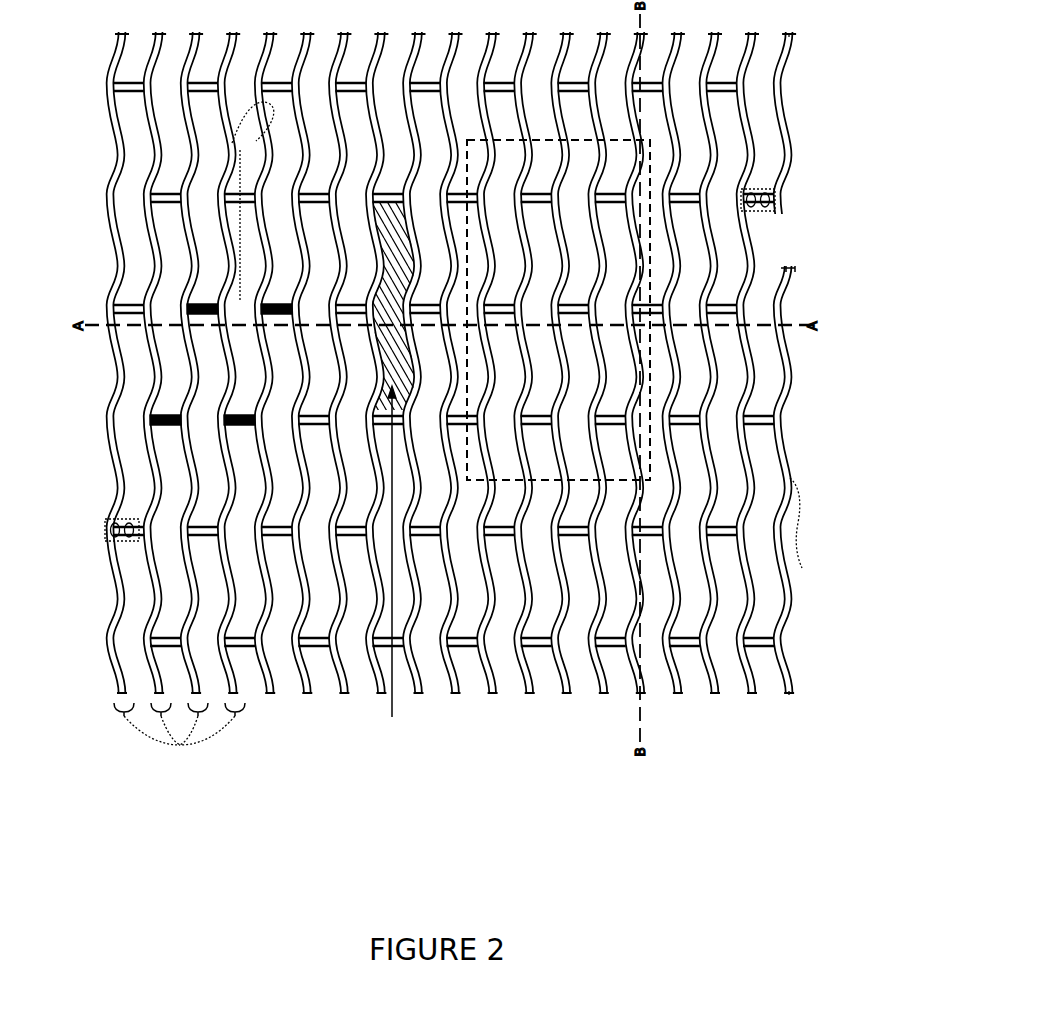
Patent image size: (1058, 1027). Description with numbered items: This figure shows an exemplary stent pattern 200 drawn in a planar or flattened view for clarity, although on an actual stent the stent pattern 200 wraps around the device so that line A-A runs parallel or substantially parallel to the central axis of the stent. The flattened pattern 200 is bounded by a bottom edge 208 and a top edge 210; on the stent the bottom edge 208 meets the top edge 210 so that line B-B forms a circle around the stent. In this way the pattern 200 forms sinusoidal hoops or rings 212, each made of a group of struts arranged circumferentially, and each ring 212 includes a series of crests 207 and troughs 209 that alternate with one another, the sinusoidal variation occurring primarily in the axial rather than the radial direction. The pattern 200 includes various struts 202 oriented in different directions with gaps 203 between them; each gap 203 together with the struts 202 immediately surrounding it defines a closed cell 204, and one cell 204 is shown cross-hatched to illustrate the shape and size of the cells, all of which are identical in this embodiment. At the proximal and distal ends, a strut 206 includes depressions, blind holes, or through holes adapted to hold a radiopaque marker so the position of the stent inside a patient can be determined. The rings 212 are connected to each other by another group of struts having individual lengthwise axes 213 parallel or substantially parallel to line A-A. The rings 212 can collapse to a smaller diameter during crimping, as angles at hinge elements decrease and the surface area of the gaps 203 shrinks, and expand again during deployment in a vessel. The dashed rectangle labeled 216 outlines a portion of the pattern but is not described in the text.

The stent pattern 200 is at (437, 31).
The struts 202 is at (324, 564).
The gaps 203 is at (431, 512).
The closed cell 204 is at (388, 566).
The strut 206 is at (122, 516).
The crests 207 is at (252, 192).
The bottom edge 208 is at (799, 693).
The troughs 209 is at (290, 150).
The top edge 210 is at (799, 35).
The sinusoidal hoops or rings 212 is at (179, 740).
The lengthwise axes 213 is at (241, 428).
The unit cell 216 is at (545, 490).